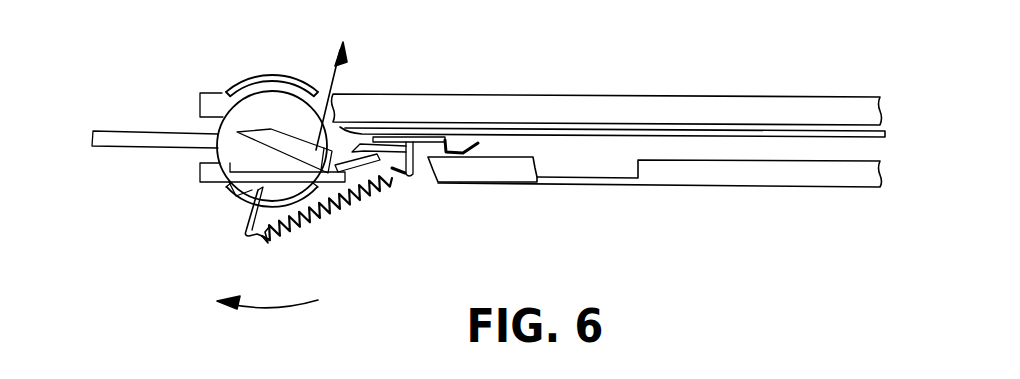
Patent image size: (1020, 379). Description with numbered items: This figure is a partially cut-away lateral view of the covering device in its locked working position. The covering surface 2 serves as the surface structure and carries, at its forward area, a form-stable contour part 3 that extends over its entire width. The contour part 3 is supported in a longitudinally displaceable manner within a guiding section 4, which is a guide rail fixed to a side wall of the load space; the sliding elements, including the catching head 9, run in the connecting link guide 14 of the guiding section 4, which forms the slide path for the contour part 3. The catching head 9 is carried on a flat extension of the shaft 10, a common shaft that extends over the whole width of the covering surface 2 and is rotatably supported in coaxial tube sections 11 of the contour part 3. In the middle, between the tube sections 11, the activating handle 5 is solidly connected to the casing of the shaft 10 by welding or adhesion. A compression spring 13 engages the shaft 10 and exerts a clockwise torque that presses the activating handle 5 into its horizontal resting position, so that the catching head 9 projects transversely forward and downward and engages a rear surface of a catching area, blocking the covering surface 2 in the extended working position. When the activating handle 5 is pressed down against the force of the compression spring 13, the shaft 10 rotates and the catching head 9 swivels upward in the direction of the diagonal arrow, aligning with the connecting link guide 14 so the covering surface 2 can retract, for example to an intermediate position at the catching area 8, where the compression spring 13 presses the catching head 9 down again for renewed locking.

The covering surface 2 is at (603, 130).
The contour part 3 is at (421, 142).
The guiding section 4 is at (708, 110).
The activating handle 5 is at (129, 135).
The catching area 8 is at (590, 166).
The catching head 9 is at (287, 144).
The shaft 10 is at (267, 100).
The tube section 11 is at (244, 82).
The compression spring 13 is at (353, 208).
The connecting link guide 14 is at (725, 148).